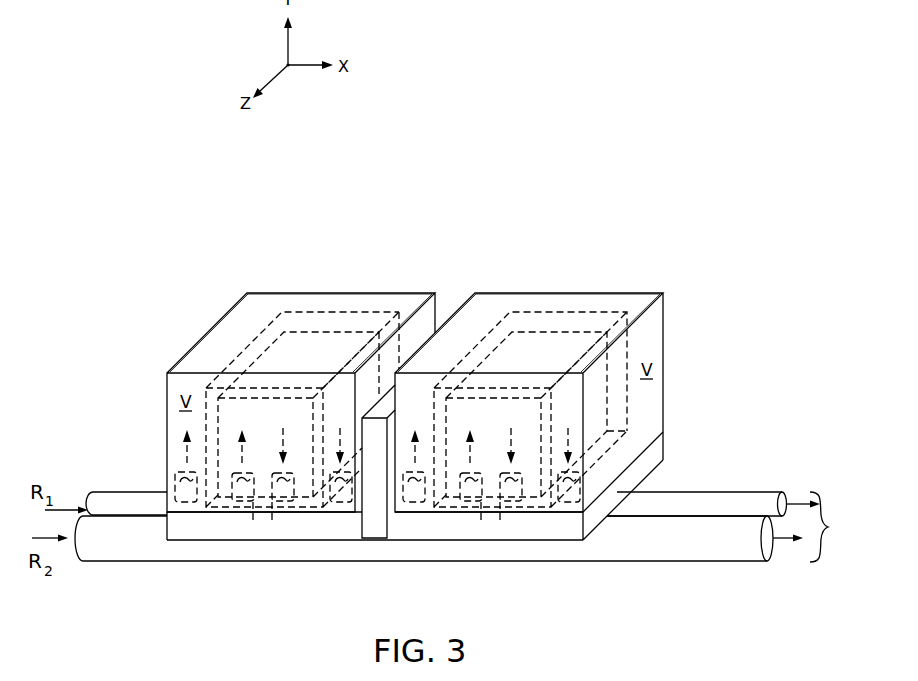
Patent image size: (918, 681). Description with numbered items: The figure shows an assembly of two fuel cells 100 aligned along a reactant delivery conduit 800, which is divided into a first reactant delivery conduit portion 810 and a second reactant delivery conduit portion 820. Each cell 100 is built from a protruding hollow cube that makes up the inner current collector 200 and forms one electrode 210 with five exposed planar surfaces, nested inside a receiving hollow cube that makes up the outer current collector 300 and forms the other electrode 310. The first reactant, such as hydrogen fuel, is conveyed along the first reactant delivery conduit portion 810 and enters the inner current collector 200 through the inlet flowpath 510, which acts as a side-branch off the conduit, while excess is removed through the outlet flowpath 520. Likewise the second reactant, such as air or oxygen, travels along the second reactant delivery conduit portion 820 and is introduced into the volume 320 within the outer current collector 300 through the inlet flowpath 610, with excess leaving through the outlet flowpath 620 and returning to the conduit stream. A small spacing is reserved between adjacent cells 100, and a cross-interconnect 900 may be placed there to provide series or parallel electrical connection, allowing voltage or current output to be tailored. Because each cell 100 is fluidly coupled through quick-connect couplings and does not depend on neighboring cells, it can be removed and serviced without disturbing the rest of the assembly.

The cell 100 is at (412, 346).
The inner current collector 200 is at (182, 532).
The electrode 210 is at (310, 333).
The outer current collector 300 is at (167, 398).
The electrode 310 is at (362, 329).
The volume 320 is at (246, 314).
The inlet flowpath 510 is at (235, 502).
The outlet flowpath 520 is at (290, 502).
The inlet flowpath 610 is at (174, 480).
The outlet flowpath 620 is at (341, 506).
The reactant delivery conduit 800 is at (828, 518).
The first reactant delivery conduit portion 810 is at (734, 492).
The second reactant delivery conduit portion 820 is at (705, 562).
The cross-interconnect 900 is at (373, 520).